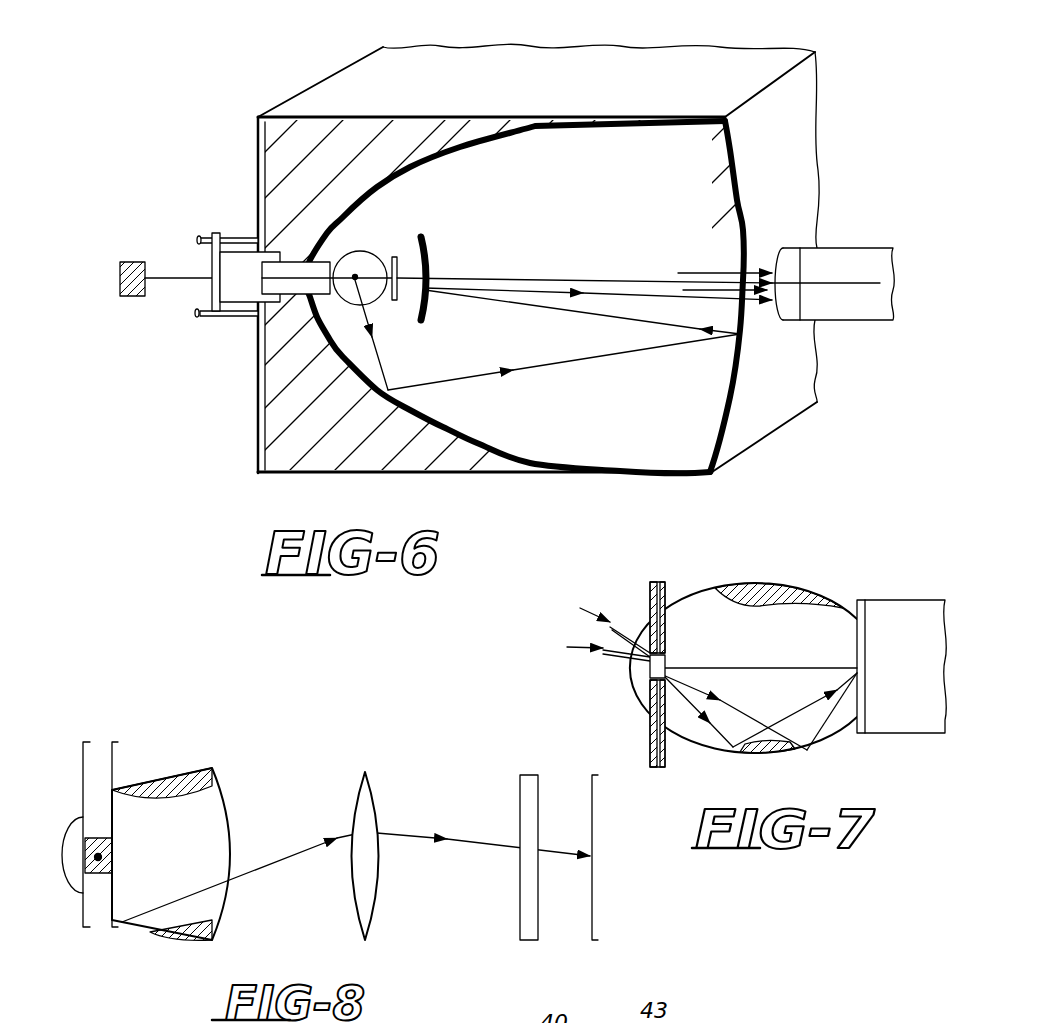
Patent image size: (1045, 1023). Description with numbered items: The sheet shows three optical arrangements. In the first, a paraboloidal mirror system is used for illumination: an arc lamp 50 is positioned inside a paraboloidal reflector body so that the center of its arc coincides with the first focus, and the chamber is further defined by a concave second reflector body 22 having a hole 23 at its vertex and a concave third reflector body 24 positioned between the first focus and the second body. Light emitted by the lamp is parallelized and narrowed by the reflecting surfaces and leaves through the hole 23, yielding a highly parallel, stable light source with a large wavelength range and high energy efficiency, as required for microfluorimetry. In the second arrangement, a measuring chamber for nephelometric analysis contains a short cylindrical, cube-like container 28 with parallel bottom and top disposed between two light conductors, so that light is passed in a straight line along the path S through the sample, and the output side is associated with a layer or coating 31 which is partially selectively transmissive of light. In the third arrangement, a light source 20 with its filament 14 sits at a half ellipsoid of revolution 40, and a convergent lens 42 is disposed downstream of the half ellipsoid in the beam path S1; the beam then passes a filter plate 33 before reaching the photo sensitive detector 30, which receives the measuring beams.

In FIG. 6, the second reflector body 22 is at (740, 168).
In FIG. 6, the hole 23 is at (743, 273).
In FIG. 6, the third reflector body 24 is at (425, 250).
In FIG. 6, the arc lamp 50 is at (345, 297).
In FIG. 7, the container 28 is at (670, 652).
In FIG. 7, the light path S is at (753, 668).
In FIG. 7, the coating 31 is at (857, 637).
In FIG. 8, the light source 20 is at (83, 772).
In FIG. 8, the lamp filament 14 is at (112, 863).
In FIG. 8, the half ellipsoid of revolution 40 is at (170, 773).
In FIG. 8, the beam path S1 is at (290, 850).
In FIG. 8, the convergent lens 42 is at (377, 917).
In FIG. 8, the filter plate 33 is at (530, 942).
In FIG. 6, the photo sensitive detector 30 is at (858, 248).
In FIG. 8, the photo sensitive detector 30 is at (592, 947).